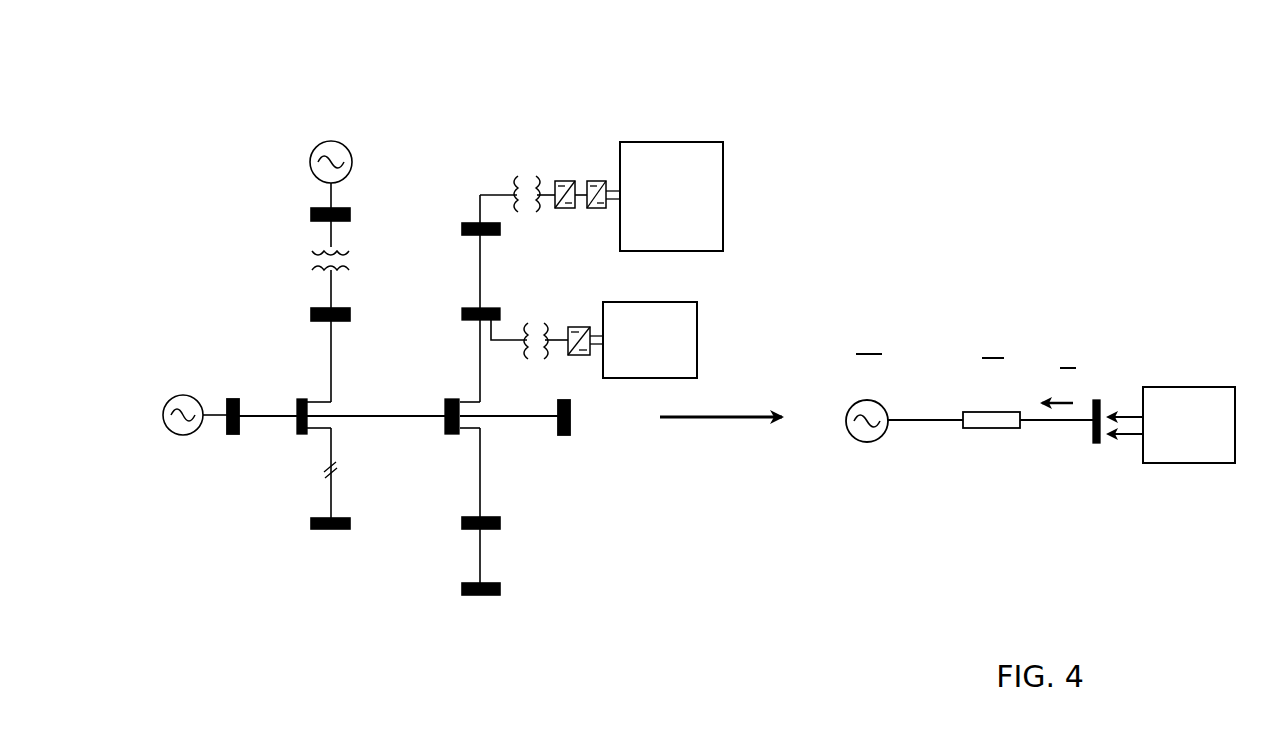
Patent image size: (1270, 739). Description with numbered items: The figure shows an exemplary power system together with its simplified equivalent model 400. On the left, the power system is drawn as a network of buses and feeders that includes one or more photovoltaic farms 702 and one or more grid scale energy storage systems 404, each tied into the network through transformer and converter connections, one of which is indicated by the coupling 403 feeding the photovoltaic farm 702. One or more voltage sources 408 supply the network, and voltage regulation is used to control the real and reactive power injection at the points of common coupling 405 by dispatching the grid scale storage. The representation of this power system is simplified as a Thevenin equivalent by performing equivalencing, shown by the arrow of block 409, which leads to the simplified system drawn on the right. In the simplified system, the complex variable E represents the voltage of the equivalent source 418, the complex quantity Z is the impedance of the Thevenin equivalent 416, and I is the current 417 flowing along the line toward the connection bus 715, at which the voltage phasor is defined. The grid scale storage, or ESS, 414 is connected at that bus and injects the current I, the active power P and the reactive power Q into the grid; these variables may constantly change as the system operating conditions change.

The power system and simplified equivalent model 400 is at (1160, 89).
The voltage source 408 is at (333, 138).
The transformer and converters connecting PV farm 403 is at (528, 164).
The point of common coupling 405 is at (448, 318).
The photovoltaic farm 702 is at (652, 241).
The grid scale energy storage system 404 is at (670, 370).
The equivalencing block 409 is at (726, 430).
The bus 715 is at (1096, 390).
The grid scale storage (or ESS) 414 is at (1209, 458).
The impedance of the Thevenin equivalent 416 is at (983, 440).
The current 417 is at (1054, 434).
The equivalent source 418 is at (866, 450).